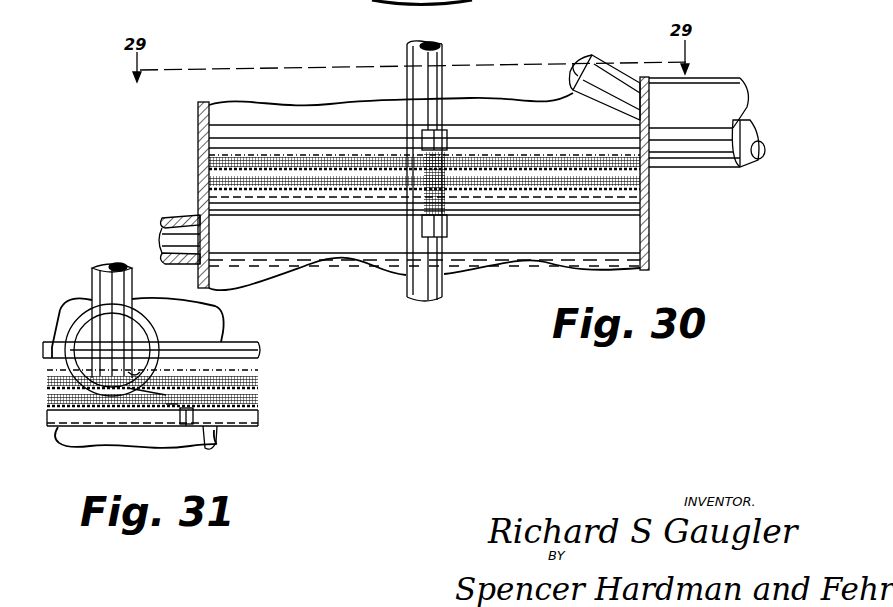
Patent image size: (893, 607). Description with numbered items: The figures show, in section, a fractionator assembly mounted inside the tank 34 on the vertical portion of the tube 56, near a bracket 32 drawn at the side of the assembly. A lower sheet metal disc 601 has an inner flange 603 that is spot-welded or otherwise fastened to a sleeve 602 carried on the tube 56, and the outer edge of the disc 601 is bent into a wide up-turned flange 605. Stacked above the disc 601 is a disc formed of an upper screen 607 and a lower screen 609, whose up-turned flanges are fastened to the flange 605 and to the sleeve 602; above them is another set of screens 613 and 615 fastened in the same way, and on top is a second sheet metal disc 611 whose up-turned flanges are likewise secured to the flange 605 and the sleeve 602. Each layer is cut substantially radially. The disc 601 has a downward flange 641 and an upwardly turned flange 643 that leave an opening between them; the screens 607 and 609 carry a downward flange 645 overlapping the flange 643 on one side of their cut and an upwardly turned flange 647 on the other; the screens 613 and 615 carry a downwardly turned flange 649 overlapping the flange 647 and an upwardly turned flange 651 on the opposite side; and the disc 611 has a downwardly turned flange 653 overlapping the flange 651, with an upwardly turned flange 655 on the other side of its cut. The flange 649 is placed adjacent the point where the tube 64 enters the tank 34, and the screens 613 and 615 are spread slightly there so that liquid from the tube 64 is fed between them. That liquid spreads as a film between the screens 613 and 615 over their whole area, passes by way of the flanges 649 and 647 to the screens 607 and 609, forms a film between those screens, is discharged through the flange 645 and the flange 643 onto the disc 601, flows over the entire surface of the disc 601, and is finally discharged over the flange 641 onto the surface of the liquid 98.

In FIG. 30, the bracket 32 is at (164, 241).
In FIG. 30, the tank 34 is at (325, 107).
In FIG. 30, the tube 56 is at (430, 75).
In FIG. 30, the tube 64 is at (703, 97).
In FIG. 30, the liquid 98 is at (516, 253).
In FIG. 30, the lower sheet metal disc 601 is at (284, 212).
In FIG. 31, the lower sheet metal disc 601 is at (64, 431).
In FIG. 30, the sleeve 602 is at (418, 233).
In FIG. 30, the inner flange 603 is at (404, 206).
In FIG. 30, the up-turned flange 605 is at (503, 127).
In FIG. 30, the upper screen 607 is at (218, 181).
In FIG. 31, the upper screen 607 is at (258, 396).
In FIG. 30, the lower screen 609 is at (220, 195).
In FIG. 31, the lower screen 609 is at (256, 407).
In FIG. 30, the sheet metal disc 611 is at (343, 150).
In FIG. 31, the sheet metal disc 611 is at (238, 369).
In FIG. 30, the screen 613 is at (212, 163).
In FIG. 31, the screen 613 is at (248, 385).
In FIG. 30, the screen 615 is at (212, 156).
In FIG. 31, the screen 615 is at (238, 374).
In FIG. 31, the downward flange 641 is at (216, 444).
In FIG. 31, the upwardly turned flange 643 is at (186, 426).
In FIG. 31, the downward flange 645 is at (185, 406).
In FIG. 31, the upwardly turned flange 647 is at (176, 408).
In FIG. 31, the downwardly turned flange 649 is at (176, 400).
In FIG. 31, the upwardly turned flange 651 is at (140, 381).
In FIG. 31, the downwardly turned flange 653 is at (126, 373).
In FIG. 31, the upwardly turned flange 655 is at (116, 366).